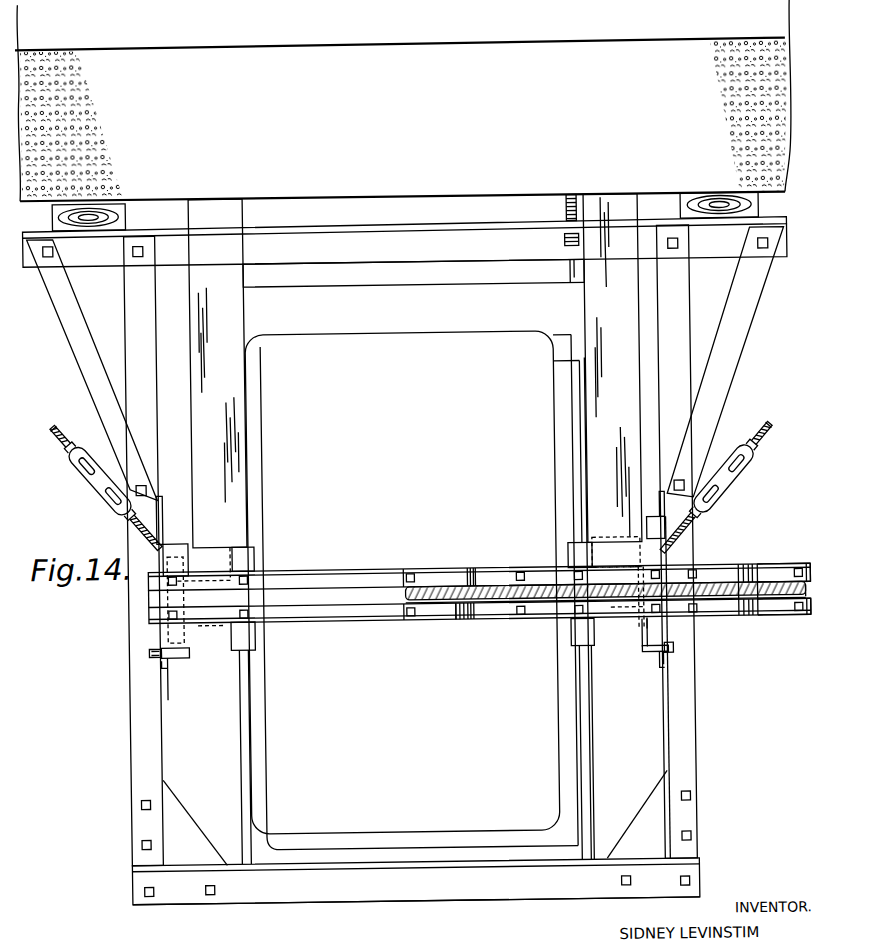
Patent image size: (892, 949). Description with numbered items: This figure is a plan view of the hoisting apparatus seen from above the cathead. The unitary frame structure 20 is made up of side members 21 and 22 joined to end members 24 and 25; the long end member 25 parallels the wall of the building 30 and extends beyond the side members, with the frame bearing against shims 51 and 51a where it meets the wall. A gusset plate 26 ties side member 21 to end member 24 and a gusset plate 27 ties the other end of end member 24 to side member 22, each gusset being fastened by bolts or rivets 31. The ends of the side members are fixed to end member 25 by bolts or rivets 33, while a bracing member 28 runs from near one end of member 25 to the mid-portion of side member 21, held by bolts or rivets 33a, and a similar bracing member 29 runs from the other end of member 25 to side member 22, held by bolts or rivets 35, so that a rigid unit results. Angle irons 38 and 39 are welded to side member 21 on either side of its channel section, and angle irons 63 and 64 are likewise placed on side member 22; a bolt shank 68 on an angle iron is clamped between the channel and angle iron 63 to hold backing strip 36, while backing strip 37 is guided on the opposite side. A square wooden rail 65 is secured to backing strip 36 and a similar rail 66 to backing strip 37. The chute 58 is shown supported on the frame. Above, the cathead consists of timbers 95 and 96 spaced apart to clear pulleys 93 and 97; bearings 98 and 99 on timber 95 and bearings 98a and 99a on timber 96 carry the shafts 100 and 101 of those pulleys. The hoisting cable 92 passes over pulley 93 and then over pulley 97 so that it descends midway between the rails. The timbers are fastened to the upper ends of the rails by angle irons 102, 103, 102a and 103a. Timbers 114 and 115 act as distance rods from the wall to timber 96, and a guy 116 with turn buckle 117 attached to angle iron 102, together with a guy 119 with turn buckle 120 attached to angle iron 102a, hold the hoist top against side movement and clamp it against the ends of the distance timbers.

The wall of the building 30 is at (667, 44).
The shim 51a is at (132, 213).
The shim 51 is at (765, 209).
The end member 25 is at (97, 264).
The chute 58 is at (397, 272).
The side member 22 is at (128, 323).
The side member 21 is at (691, 326).
The bolts or rivets 33 is at (147, 254).
The bolts or rivets 33a is at (775, 254).
The bolts or rivets 35 is at (52, 256).
The bracing member 29 is at (76, 349).
The bracing member 28 is at (748, 334).
The timber 114 is at (250, 303).
The timber 115 is at (588, 299).
The turn buckle 117 is at (94, 471).
The guy 116 is at (62, 426).
The angle iron 63 is at (161, 514).
The bolt shank 68 is at (184, 541).
The turn buckle 120 is at (752, 473).
The guy 119 is at (770, 441).
The angle iron 38 is at (658, 519).
The timber 96 is at (313, 568).
The timber 95 is at (313, 621).
The pulley 97 is at (492, 586).
The bearing 98a is at (422, 569).
The bearing 98 is at (418, 621).
The shaft 101 is at (462, 621).
The hoisting cable 92 is at (616, 569).
The shaft 100 is at (746, 621).
The bearing 99a is at (718, 569).
The bearing 99 is at (774, 621).
The pulley 93 is at (789, 604).
The backing strip 36 is at (160, 600).
The backing strip 37 is at (648, 628).
The angle iron 103 is at (241, 650).
The square wooden rail 65 is at (198, 626).
The angle iron 102 is at (186, 655).
The angle iron 64 is at (166, 672).
The angle iron 103a is at (592, 649).
The rail 66 is at (640, 621).
The angle iron 102a is at (656, 655).
The angle iron 39 is at (656, 666).
The unitary frame structure 20 is at (348, 903).
The end member 24 is at (433, 899).
The gusset plate 27 is at (184, 796).
The gusset plate 26 is at (640, 812).
The bolts or rivets 31 is at (138, 841).